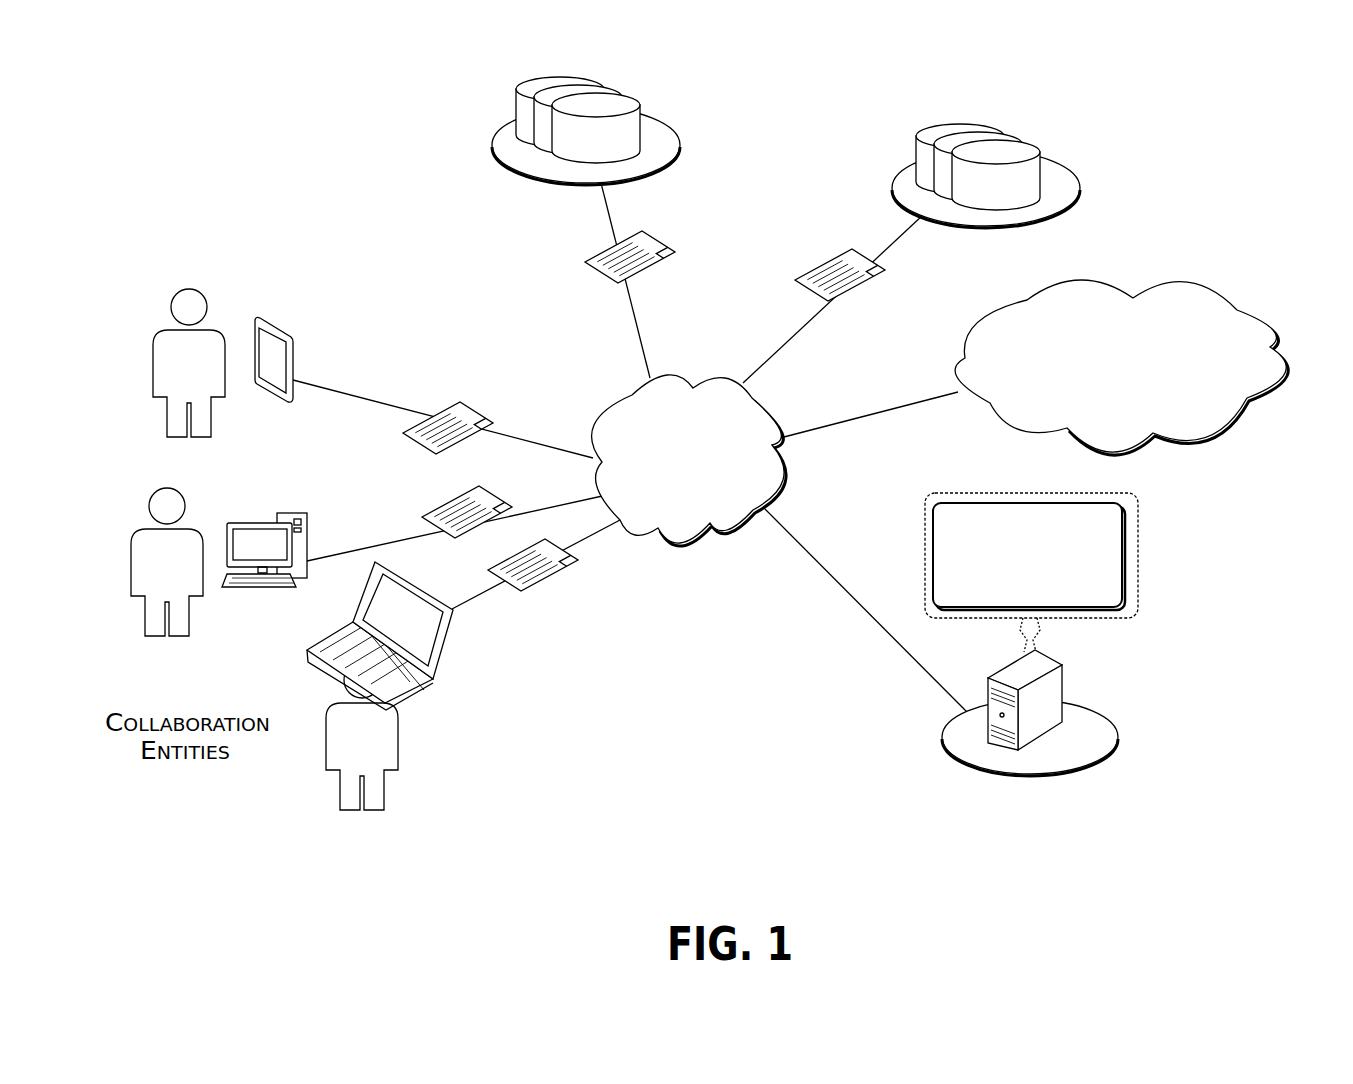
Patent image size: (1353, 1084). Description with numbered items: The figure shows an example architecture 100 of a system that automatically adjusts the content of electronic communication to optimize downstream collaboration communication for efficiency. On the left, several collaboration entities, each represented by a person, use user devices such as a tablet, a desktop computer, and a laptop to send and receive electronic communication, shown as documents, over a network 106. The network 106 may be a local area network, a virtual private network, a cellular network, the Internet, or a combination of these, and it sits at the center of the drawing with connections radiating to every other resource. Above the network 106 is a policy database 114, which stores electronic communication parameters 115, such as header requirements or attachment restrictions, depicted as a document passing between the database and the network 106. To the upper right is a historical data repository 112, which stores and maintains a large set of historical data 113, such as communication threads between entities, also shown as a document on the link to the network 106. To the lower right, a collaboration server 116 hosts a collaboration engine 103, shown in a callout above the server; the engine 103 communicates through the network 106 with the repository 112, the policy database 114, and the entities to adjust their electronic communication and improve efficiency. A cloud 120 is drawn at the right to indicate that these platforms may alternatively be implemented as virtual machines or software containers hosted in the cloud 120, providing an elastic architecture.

The architecture 100 is at (150, 72).
The collaboration engine 103 is at (1031, 572).
The network 106 is at (597, 418).
The historical data repository 112 is at (1058, 176).
The historical data 113 is at (875, 275).
The policy database 114 is at (678, 138).
The electronic communication parameters 115 is at (677, 255).
The collaboration server 116 is at (1105, 722).
The cloud 120 is at (1245, 420).